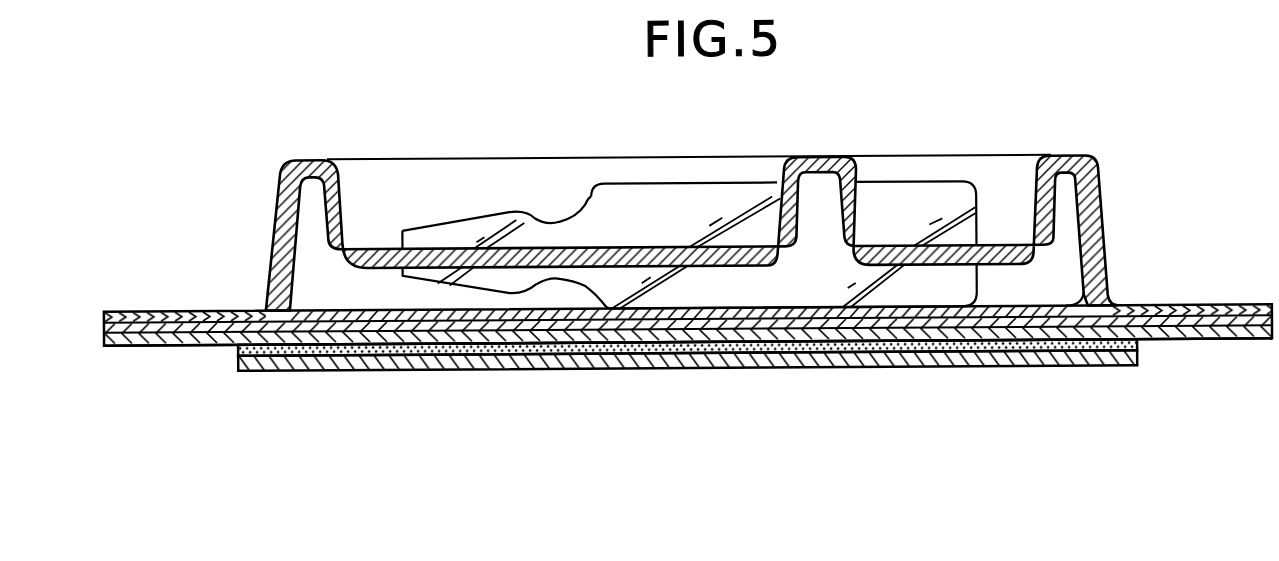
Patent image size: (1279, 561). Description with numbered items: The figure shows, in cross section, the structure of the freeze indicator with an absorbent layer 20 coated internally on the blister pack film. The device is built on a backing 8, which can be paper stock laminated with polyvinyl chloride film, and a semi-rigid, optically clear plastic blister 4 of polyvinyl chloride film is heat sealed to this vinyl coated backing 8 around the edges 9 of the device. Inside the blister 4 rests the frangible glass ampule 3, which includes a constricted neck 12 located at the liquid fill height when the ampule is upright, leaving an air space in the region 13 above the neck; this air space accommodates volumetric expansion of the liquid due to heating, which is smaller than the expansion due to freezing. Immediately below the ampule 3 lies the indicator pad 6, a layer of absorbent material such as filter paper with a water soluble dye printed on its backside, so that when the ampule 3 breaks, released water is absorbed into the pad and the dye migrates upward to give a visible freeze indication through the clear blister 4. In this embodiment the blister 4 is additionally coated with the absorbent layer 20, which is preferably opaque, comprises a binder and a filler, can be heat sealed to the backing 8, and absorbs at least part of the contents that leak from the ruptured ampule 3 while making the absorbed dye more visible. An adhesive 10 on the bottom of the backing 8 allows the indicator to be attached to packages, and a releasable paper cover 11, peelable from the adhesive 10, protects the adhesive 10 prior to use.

The ampule 3 is at (725, 197).
The blister 4 is at (1068, 160).
The indicator pad 6 is at (1088, 302).
The backing 8 is at (183, 333).
The edges 9 is at (177, 308).
The adhesive 10 is at (518, 357).
The releasable paper cover 11 is at (650, 365).
The constricted neck 12 is at (533, 212).
The air space region 13 is at (588, 219).
The absorbent layer 20 is at (1097, 204).